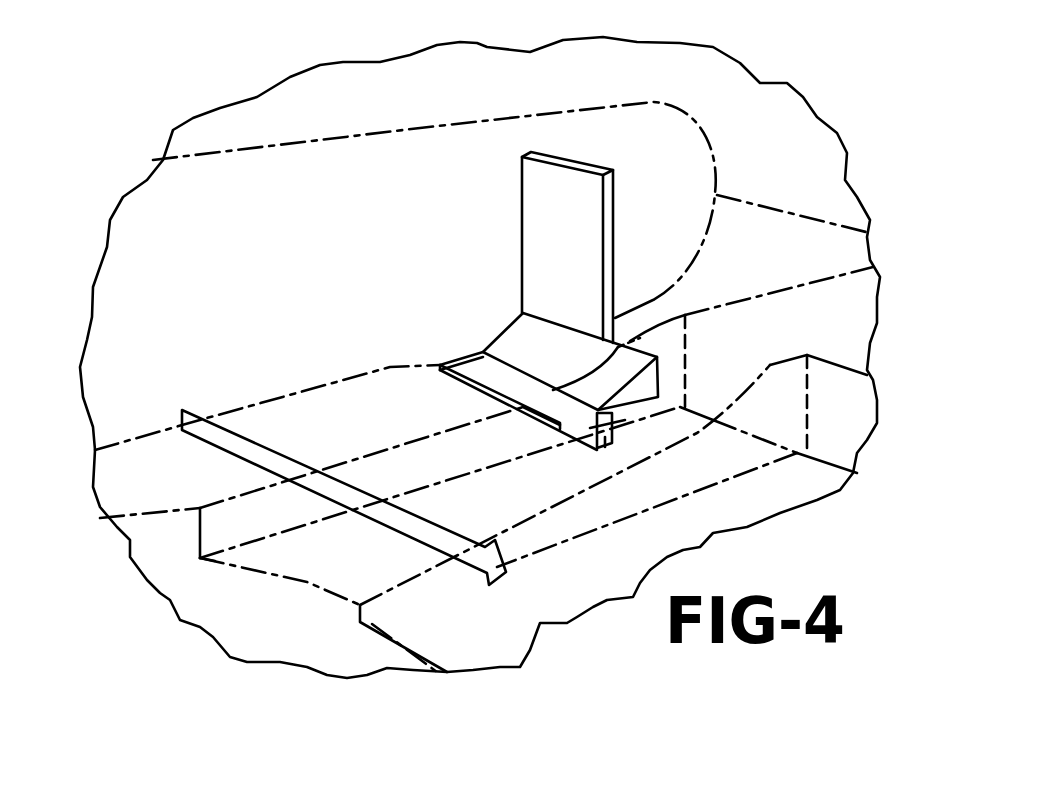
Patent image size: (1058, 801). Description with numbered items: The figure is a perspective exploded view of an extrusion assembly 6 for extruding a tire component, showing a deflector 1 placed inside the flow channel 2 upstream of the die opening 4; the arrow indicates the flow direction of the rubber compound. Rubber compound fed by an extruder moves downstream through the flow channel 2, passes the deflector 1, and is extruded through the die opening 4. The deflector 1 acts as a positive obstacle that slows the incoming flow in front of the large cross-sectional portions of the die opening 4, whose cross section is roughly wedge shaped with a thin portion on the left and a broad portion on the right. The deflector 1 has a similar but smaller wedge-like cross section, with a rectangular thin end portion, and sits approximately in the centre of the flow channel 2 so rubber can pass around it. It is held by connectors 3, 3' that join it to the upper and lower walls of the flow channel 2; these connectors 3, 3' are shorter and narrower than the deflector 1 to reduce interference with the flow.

The deflector 1 is at (503, 331).
The flow channel 2 is at (668, 333).
The connector 3 is at (596, 247).
The connector 3' is at (588, 452).
The die opening 4 is at (637, 495).
The extrusion assembly 6 is at (700, 128).